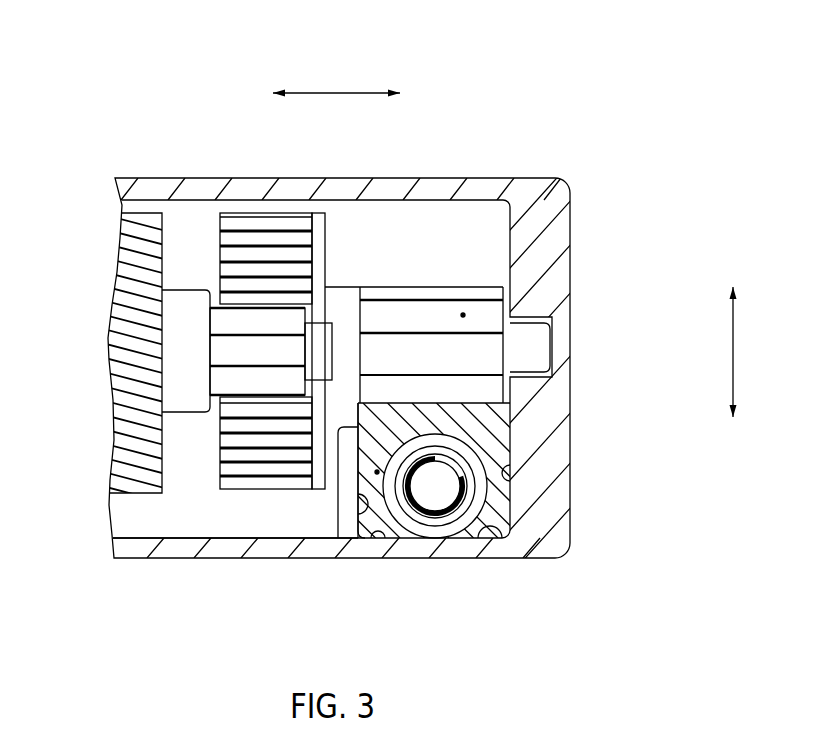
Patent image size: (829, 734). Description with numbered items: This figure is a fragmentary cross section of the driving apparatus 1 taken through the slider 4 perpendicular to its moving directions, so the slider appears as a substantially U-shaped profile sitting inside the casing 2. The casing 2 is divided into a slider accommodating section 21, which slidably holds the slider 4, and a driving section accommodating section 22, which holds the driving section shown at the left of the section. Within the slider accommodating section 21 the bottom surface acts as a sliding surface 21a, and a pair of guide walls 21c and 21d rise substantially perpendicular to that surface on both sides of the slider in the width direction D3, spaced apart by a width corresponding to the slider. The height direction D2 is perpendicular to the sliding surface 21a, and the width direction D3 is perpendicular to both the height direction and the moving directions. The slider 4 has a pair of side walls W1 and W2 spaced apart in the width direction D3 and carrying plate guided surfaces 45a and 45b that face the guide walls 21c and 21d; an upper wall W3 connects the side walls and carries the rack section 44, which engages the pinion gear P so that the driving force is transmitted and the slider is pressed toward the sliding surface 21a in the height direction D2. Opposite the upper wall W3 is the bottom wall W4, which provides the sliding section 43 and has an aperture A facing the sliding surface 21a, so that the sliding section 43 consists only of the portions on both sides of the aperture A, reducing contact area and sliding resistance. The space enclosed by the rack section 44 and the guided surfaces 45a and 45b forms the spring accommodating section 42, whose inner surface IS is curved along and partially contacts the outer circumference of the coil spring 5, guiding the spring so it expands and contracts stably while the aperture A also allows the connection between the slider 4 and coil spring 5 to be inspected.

The driving apparatus 1 is at (568, 112).
The casing 2 is at (162, 163).
The slider 4 is at (360, 415).
The coil spring 5 is at (528, 308).
The slider accommodating section 21 is at (518, 520).
The sliding surface 21a is at (378, 522).
The guide wall 21c is at (348, 528).
The guide wall 21d is at (512, 477).
The driving section accommodating section 22 is at (187, 512).
The spring accommodating section 42 is at (457, 514).
The sliding section 43 is at (478, 525).
The rack section 44 is at (548, 350).
The guided surface 45a is at (348, 458).
The guided surface 45b is at (512, 450).
The aperture A is at (416, 520).
The pinion gear P is at (463, 315).
The inner surface IS is at (428, 413).
The side wall W1 is at (377, 472).
The side wall W2 is at (500, 488).
The upper wall W3 is at (435, 438).
The bottom wall W4 is at (405, 520).
The height direction D2 is at (730, 352).
The width direction D3 is at (338, 93).